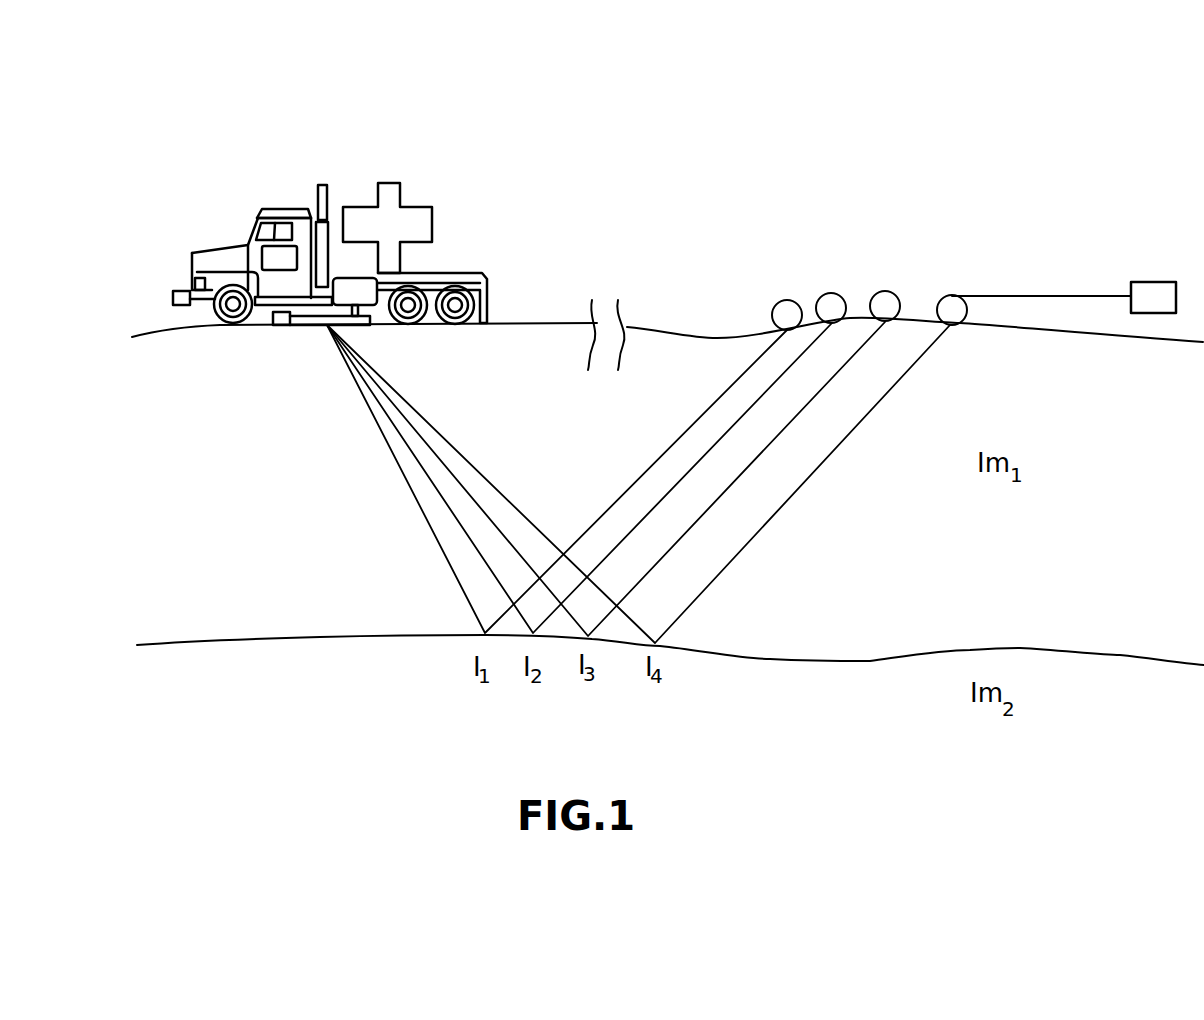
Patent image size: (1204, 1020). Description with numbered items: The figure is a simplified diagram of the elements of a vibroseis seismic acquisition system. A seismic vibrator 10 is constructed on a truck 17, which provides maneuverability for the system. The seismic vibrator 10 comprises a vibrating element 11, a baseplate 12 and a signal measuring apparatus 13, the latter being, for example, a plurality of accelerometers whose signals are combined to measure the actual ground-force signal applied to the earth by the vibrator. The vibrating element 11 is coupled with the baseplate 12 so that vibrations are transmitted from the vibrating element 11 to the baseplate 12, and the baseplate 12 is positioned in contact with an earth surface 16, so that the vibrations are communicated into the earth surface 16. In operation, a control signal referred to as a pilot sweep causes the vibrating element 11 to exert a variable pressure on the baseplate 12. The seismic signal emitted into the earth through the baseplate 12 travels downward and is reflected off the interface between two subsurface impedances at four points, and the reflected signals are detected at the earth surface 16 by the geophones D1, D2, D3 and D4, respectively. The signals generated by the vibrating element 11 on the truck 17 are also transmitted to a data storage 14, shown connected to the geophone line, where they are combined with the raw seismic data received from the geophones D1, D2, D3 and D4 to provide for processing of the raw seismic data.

The seismic vibrator 10 is at (185, 183).
The vibrating element 11 is at (417, 208).
The baseplate 12 is at (293, 325).
The signal measuring apparatus 13 is at (357, 318).
The data storage 14 is at (1155, 295).
The earth surface 16 is at (157, 330).
The truck 17 is at (293, 212).
The geophone D1 is at (787, 292).
The geophone D2 is at (831, 288).
The geophone D3 is at (884, 287).
The geophone D4 is at (954, 289).